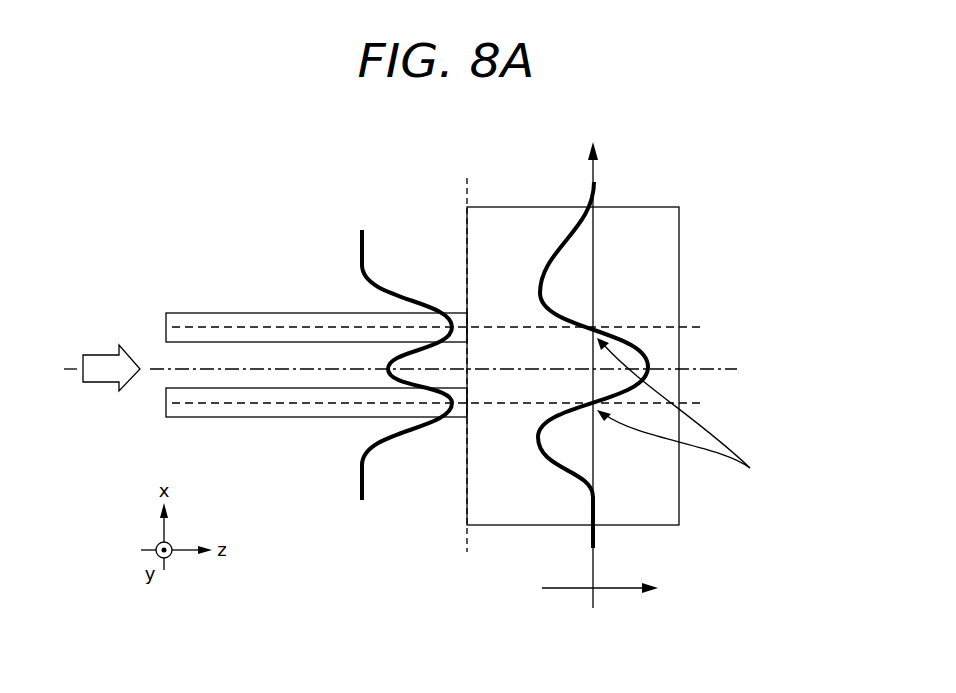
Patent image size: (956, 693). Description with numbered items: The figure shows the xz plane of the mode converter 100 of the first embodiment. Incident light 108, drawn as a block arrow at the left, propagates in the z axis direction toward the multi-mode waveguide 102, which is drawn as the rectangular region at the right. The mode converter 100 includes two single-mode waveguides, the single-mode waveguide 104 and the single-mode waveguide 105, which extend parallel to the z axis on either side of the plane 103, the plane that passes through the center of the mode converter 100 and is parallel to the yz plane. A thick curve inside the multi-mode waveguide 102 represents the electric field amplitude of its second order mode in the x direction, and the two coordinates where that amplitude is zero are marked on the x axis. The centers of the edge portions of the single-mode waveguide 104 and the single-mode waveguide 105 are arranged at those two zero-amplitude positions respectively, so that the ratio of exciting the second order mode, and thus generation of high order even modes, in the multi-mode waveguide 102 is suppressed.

The mode converter 100 is at (285, 196).
The multi-mode waveguide 102 is at (642, 218).
The plane 103 is at (728, 362).
The single-mode waveguide 104 is at (228, 313).
The single-mode waveguide 105 is at (226, 420).
The incident light 108 is at (103, 354).